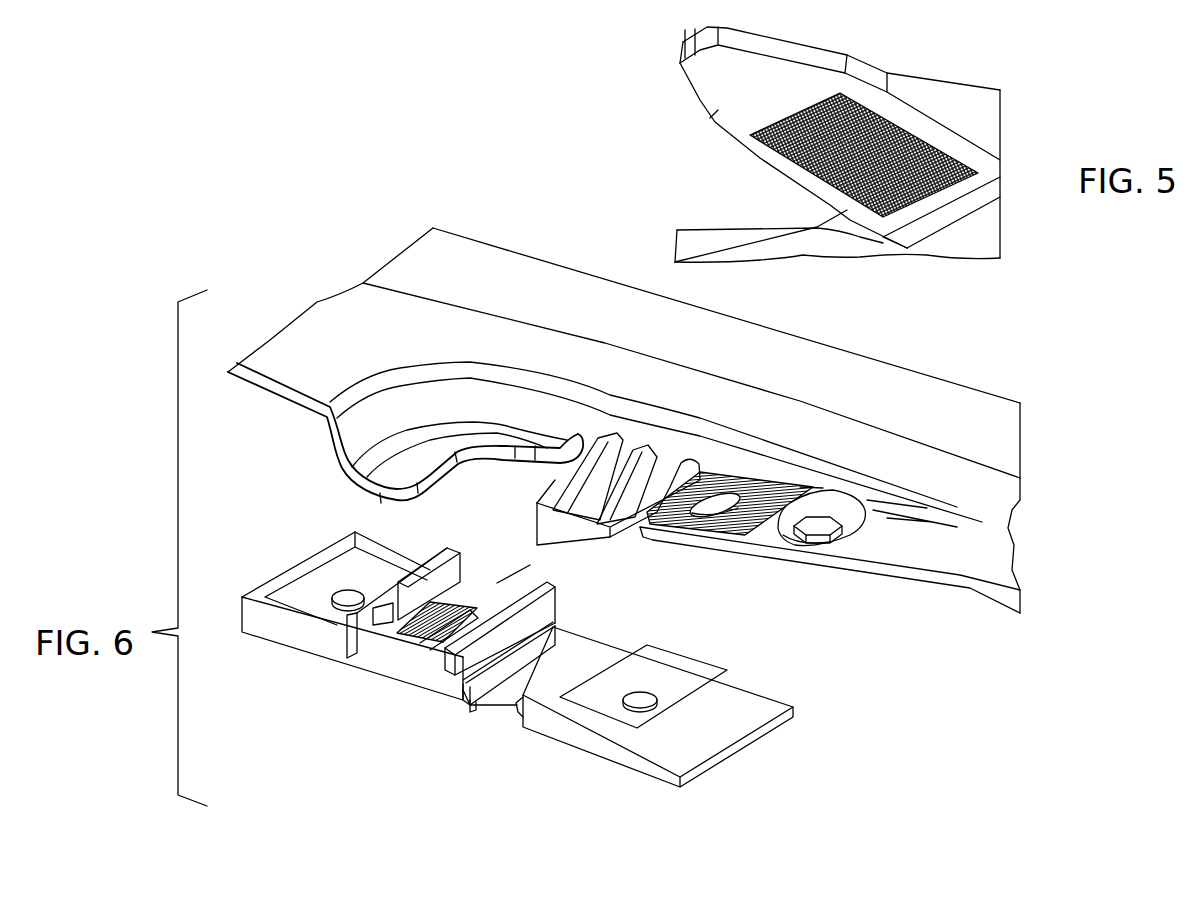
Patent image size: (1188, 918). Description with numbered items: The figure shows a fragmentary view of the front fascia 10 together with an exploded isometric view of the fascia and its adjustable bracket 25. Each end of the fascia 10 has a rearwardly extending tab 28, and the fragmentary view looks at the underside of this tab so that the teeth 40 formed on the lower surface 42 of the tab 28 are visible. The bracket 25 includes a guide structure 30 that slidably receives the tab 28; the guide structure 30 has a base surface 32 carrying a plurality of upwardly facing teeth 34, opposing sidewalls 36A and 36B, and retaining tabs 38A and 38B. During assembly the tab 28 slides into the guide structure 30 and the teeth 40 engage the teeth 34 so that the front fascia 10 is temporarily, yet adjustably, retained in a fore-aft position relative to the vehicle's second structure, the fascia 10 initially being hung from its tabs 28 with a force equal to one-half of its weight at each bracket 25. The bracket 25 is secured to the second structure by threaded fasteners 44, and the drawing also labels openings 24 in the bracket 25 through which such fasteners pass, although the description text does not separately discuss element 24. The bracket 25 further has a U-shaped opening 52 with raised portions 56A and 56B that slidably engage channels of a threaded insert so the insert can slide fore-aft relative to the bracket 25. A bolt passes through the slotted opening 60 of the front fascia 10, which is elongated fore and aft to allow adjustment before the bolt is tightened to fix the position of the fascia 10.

In FIG. 5, the front fascia 10 is at (878, 247).
In FIG. 6, the front fascia 10 is at (953, 372).
In FIG. 6, the mounting aperture 24 is at (348, 595).
In FIG. 6, the bracket 25 is at (783, 688).
In FIG. 5, the tab 28 is at (787, 37).
In FIG. 6, the tab 28 is at (603, 542).
In FIG. 6, the guide structure 30 is at (380, 657).
In FIG. 6, the base surface 32 is at (410, 663).
In FIG. 6, the teeth 34 is at (430, 645).
In FIG. 6, the sidewall 36A is at (363, 632).
In FIG. 6, the sidewall 36B is at (433, 645).
In FIG. 6, the retaining tab 38A is at (427, 597).
In FIG. 6, the retaining tab 38B is at (511, 602).
In FIG. 5, the teeth 40 is at (770, 155).
In FIG. 5, the lower surface 42 is at (717, 107).
In FIG. 6, the threaded fastener 44 is at (826, 522).
In FIG. 6, the U-shaped opening 52 is at (498, 703).
In FIG. 6, the raised portion 56A is at (514, 716).
In FIG. 6, the raised portion 56B is at (475, 708).
In FIG. 6, the slotted opening 60 is at (716, 514).